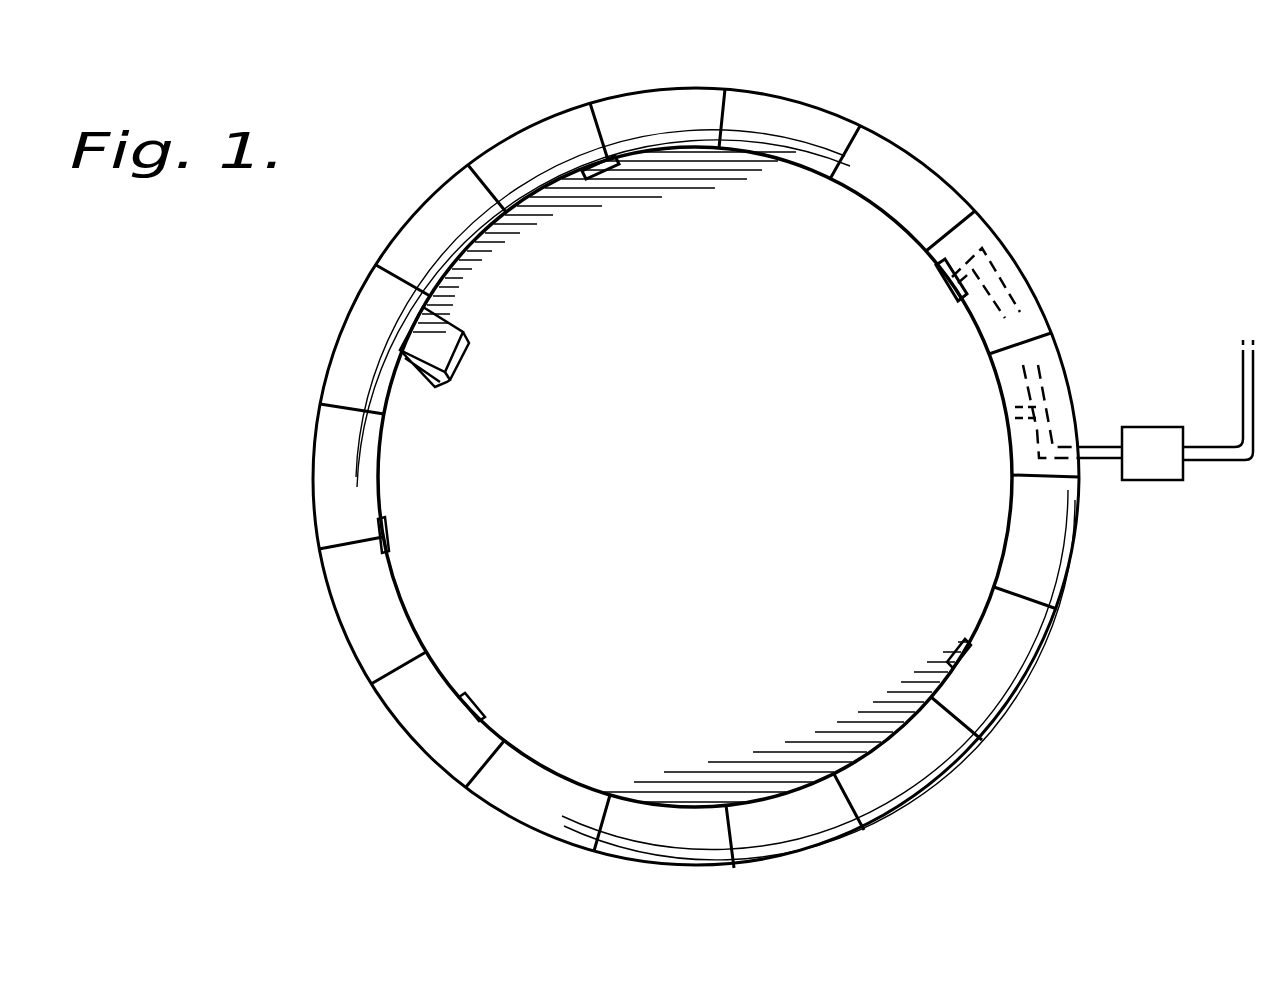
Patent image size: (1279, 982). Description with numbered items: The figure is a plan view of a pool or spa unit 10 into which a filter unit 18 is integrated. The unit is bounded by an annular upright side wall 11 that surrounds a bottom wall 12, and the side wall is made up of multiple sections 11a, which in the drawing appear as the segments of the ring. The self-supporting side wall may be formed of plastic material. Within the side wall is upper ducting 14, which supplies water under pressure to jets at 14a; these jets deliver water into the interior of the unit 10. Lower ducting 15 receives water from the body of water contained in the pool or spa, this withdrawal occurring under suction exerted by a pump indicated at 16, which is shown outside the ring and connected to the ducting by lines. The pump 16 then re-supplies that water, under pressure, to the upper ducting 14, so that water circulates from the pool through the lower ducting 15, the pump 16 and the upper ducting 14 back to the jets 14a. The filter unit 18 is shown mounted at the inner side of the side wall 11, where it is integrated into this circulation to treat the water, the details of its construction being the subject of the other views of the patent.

The pool or spa unit 10 is at (932, 108).
The annular upright side wall 11 is at (310, 607).
The sections 11a is at (755, 107).
The bottom wall 12 is at (705, 550).
The upper ducting 14 is at (1010, 264).
The jets 14a is at (612, 164).
The lower ducting 15 is at (1050, 412).
The pump 16 is at (1155, 462).
The filter unit 18 is at (442, 348).